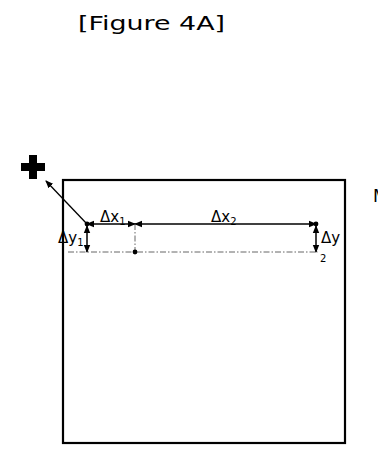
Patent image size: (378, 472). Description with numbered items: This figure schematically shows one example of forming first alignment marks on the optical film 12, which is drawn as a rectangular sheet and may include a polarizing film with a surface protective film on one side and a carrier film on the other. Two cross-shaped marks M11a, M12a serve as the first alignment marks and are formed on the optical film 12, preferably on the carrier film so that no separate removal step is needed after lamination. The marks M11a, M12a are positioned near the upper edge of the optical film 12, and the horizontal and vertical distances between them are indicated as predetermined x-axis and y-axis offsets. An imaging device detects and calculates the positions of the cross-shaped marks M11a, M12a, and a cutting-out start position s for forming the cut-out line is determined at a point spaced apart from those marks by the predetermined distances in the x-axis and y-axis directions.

The optical film 12 is at (62, 419).
The cross-shaped mark M11a is at (87, 221).
The cross-shaped mark M12a is at (316, 221).
The cutting-out start position s is at (135, 254).